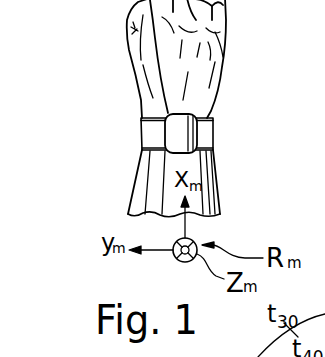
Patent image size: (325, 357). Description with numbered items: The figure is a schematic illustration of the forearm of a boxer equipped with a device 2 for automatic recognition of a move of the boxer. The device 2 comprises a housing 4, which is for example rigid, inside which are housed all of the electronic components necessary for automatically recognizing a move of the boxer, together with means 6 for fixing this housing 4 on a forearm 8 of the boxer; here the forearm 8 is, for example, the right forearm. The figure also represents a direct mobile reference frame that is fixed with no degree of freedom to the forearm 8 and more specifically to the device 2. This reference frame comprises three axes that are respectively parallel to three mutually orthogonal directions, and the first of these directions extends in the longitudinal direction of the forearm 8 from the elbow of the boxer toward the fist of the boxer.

The device for automatic recognition of a move of a boxer 2 is at (70, 123).
The housing 4 is at (180, 131).
The means for fixing the housing 6 is at (157, 141).
The forearm 8 is at (202, 193).